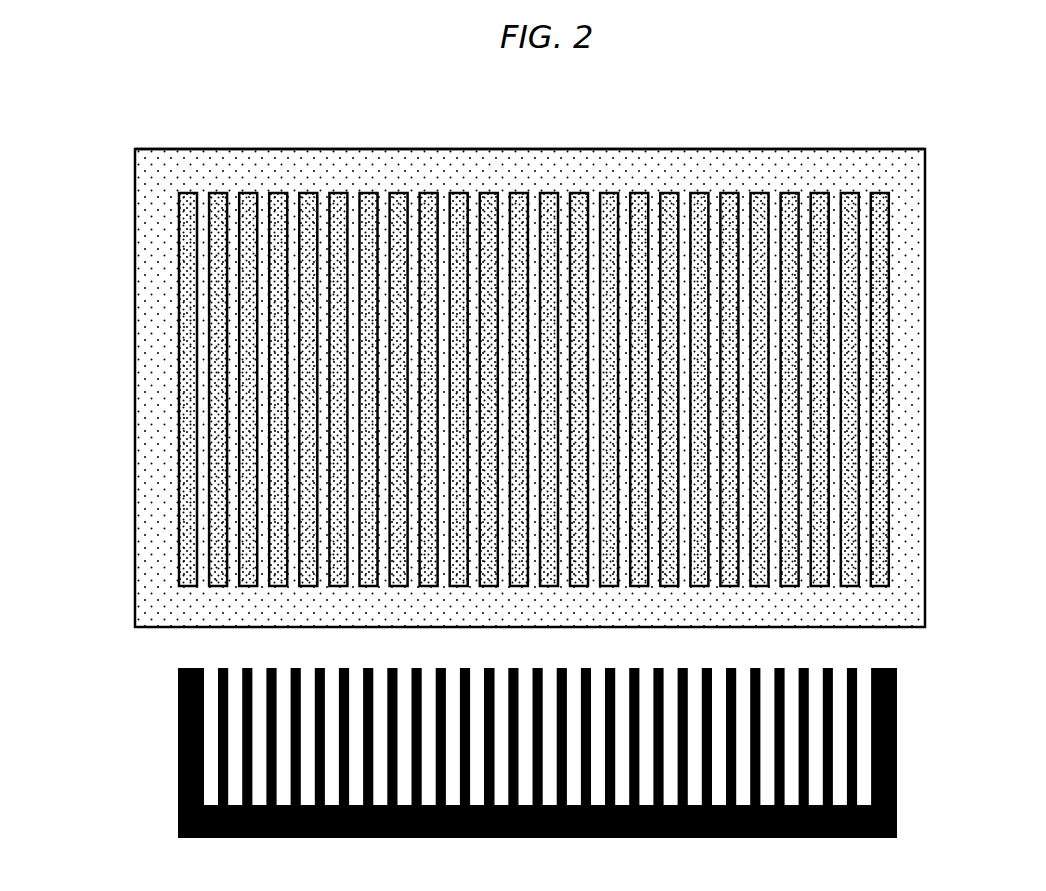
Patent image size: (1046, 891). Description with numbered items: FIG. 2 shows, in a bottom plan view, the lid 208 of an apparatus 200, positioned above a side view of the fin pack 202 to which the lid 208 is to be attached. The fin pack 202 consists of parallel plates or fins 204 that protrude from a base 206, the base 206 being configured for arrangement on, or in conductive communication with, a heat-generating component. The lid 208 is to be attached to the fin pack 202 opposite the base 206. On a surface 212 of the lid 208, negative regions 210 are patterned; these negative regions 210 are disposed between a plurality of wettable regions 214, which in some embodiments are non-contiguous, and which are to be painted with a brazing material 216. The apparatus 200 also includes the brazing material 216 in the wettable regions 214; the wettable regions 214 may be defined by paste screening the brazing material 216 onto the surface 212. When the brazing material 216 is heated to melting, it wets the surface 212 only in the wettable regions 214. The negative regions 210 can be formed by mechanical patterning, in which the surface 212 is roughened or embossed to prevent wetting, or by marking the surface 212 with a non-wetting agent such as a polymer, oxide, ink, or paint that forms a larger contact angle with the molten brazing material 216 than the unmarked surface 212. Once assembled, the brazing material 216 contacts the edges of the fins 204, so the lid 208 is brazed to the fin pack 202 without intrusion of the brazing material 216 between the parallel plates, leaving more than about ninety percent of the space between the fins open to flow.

The apparatus 200 is at (512, 352).
The fin pack 202 is at (470, 753).
The fins 204 is at (490, 668).
The base 206 is at (378, 836).
The lid 208 is at (398, 137).
The negative regions 210 is at (507, 163).
The surface 212 is at (598, 180).
The wettable regions 214 is at (743, 182).
The brazing material 216 is at (763, 207).